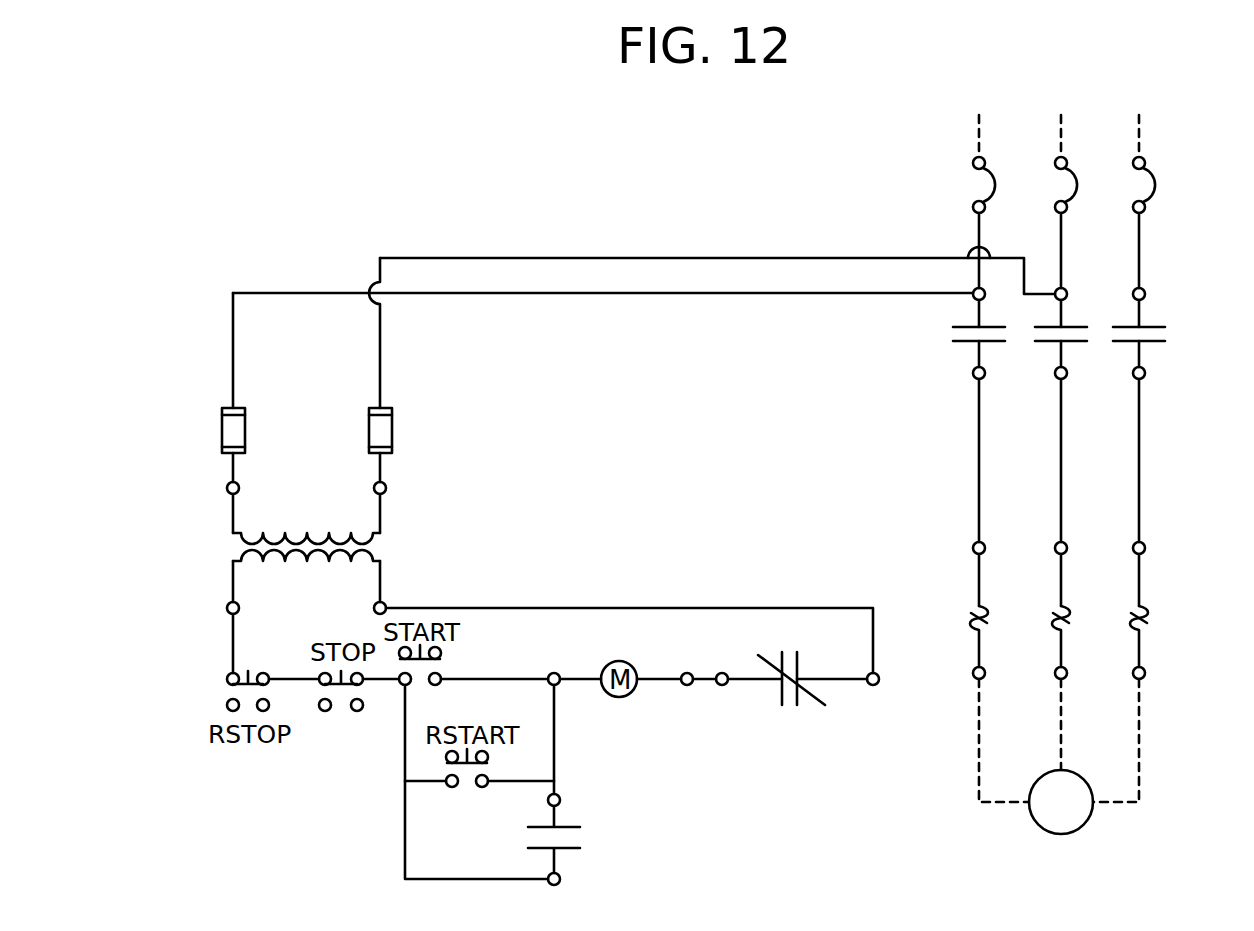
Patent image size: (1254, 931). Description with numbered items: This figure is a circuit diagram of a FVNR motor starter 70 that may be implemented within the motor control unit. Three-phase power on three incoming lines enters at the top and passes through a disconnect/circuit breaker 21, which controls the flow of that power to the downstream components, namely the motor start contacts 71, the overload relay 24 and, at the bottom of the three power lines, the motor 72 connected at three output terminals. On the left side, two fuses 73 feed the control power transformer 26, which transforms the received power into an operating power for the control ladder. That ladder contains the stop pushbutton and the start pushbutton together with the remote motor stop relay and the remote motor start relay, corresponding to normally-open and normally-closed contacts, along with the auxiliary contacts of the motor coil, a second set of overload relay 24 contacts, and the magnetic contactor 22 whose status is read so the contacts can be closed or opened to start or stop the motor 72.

The FVNR motor starter 70 is at (762, 193).
The disconnect/circuit breaker 21 is at (993, 182).
The motor start contacts 71 is at (1172, 336).
The fuse 73 is at (221, 427).
The control power transformer 26 is at (378, 538).
The overload relay 24 is at (1145, 612).
The magnetic contactor 22 is at (586, 836).
The motor 72 is at (1086, 826).